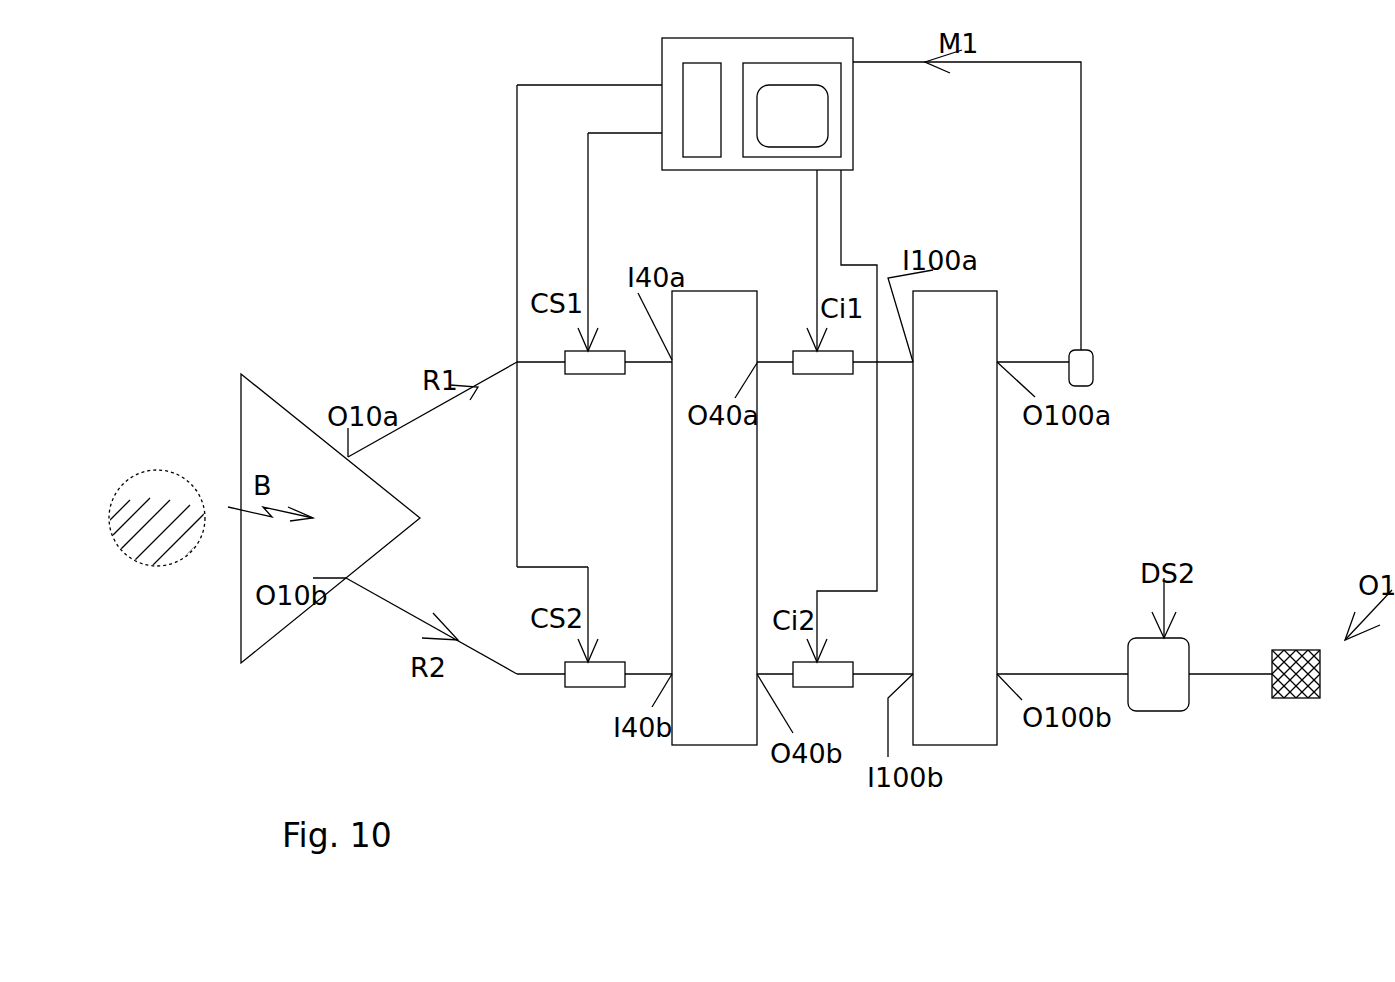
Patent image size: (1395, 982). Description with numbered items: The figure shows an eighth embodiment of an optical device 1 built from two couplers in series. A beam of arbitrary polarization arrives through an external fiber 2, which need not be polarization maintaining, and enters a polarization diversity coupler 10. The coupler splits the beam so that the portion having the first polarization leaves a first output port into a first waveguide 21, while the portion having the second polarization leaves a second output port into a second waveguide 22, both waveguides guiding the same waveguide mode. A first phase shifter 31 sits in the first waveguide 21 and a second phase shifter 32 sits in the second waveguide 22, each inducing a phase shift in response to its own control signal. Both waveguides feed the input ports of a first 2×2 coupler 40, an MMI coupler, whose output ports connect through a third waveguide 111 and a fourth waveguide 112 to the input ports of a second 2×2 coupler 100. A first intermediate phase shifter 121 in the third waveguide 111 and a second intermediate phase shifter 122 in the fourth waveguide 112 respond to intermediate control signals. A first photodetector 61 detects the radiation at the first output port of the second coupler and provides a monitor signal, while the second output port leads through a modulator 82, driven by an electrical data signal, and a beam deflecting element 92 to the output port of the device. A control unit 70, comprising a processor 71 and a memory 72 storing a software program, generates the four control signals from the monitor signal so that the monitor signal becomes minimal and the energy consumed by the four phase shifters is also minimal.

The optical device 1 is at (482, 242).
The external fiber 2 is at (158, 493).
The polarization diversity coupler 10 is at (302, 418).
The first waveguide 21 is at (410, 422).
The second waveguide 22 is at (395, 602).
The first phase shifter 31 is at (602, 363).
The second phase shifter 32 is at (587, 675).
The first 2×2 coupler 40 is at (714, 518).
The first photodetector 61 is at (1080, 363).
The control unit 70 is at (662, 60).
The processor 71 is at (697, 145).
The memory 72 is at (780, 158).
The modulator 82 is at (1158, 674).
The beam deflecting element 92 is at (1308, 673).
The second 2×2 coupler 100 is at (955, 518).
The third waveguide 111 is at (770, 361).
The fourth waveguide 112 is at (887, 670).
The first intermediate phase shifter 121 is at (805, 363).
The second intermediate phase shifter 122 is at (817, 673).